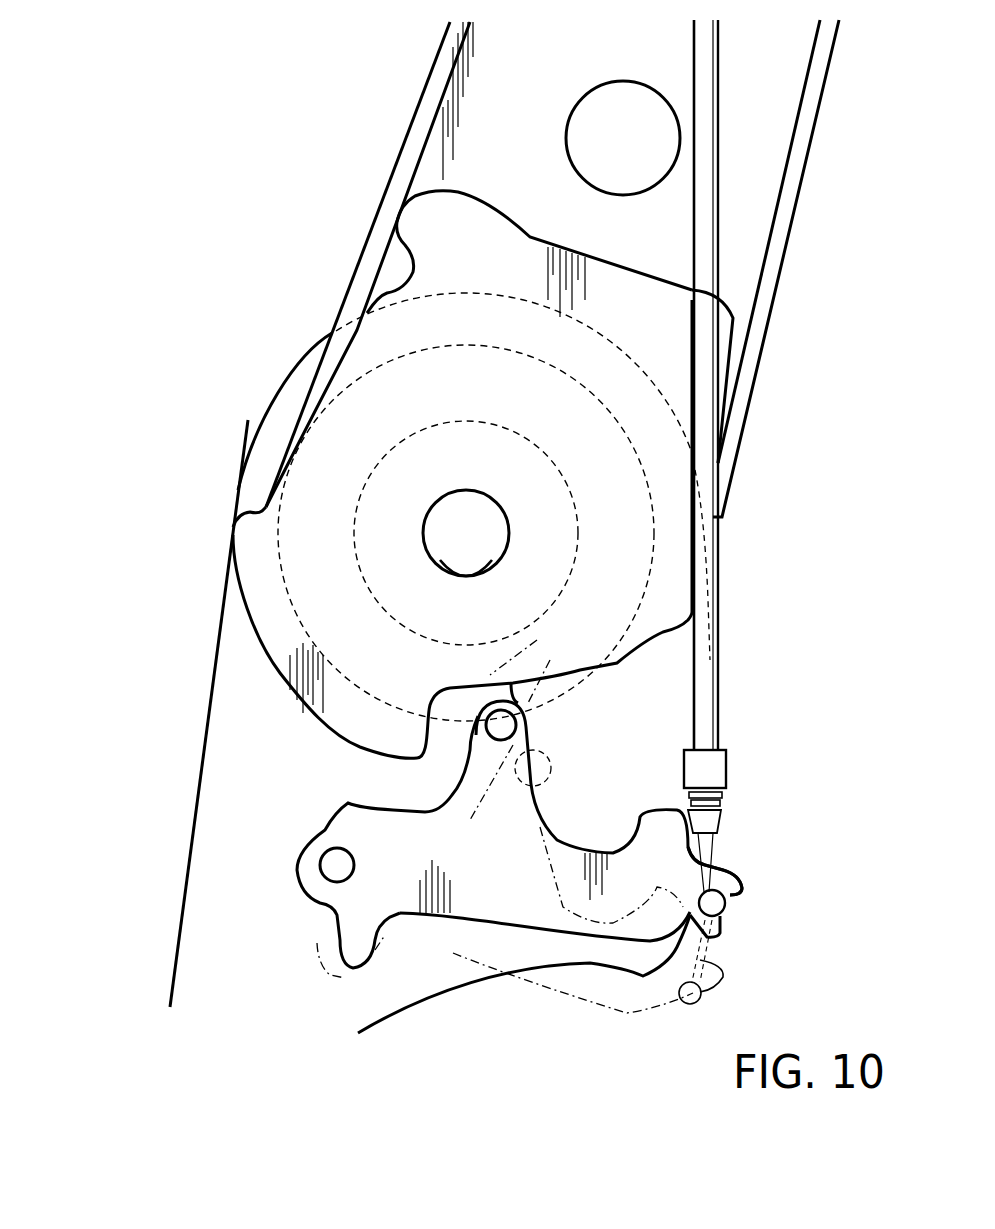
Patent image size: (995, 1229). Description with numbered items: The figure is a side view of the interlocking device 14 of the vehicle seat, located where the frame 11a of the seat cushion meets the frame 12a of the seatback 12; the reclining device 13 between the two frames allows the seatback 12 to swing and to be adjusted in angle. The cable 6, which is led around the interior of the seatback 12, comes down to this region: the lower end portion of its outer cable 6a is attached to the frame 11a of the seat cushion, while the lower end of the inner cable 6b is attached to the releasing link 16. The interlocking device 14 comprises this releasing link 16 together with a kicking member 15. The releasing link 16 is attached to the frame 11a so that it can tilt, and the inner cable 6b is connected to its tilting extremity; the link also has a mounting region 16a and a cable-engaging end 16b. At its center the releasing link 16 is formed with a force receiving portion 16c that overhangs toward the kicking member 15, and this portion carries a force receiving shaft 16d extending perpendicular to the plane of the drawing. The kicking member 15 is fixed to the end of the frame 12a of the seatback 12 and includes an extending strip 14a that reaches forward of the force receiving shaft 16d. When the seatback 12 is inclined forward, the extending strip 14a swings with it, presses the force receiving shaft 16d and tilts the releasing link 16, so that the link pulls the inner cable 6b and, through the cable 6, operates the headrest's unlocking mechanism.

The cable 6 is at (780, 512).
The outer cable 6a is at (708, 268).
The inner cable 6b is at (737, 883).
The frame 11a is at (230, 798).
The seatback 12 is at (390, 90).
The frame 12a is at (758, 227).
The reclining device 13 is at (608, 485).
The interlocking device 14 is at (428, 547).
The extending strip 14a is at (440, 725).
The kicking member 15 is at (260, 543).
The releasing link 16 is at (428, 811).
The lever mounting hole 16a is at (333, 867).
The lever hook engaging cable end 16b is at (717, 857).
The force receiving portion 16c is at (537, 742).
The force receiving shaft 16d is at (501, 725).